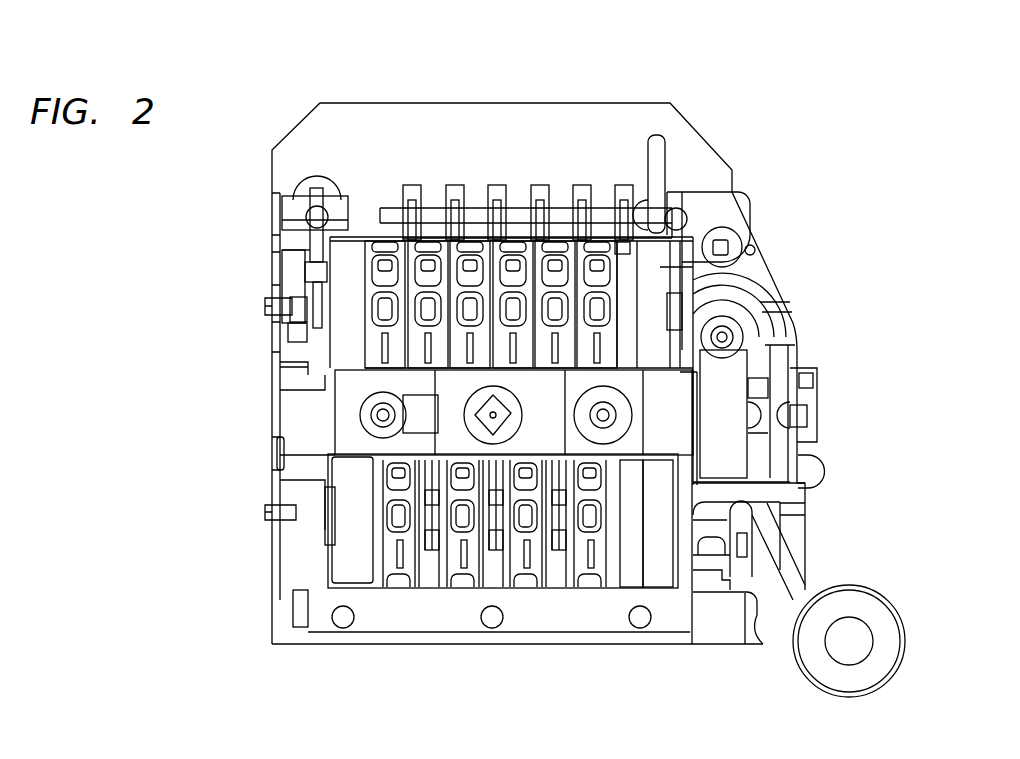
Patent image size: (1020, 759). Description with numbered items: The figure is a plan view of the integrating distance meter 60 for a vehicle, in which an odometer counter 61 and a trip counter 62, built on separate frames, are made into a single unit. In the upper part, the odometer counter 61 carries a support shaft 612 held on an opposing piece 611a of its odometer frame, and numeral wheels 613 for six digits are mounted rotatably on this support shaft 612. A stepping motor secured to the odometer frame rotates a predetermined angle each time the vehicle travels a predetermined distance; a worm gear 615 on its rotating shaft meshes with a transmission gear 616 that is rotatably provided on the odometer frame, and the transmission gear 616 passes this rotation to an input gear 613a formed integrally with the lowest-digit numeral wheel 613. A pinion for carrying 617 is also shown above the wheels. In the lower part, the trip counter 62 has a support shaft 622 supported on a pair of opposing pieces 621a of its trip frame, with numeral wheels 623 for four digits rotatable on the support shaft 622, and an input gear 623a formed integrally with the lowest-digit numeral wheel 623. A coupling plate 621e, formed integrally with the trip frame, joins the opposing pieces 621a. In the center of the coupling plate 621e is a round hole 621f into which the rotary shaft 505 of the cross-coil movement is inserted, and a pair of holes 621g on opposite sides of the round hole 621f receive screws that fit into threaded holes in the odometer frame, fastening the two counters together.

The integrating distance meter 60 is at (245, 402).
The odometer counter 61 is at (357, 208).
The trip counter 62 is at (370, 610).
The rotary shaft 505 is at (478, 412).
The opposing piece 611a is at (311, 304).
The support shaft 612 is at (265, 304).
The numeral wheels 613 is at (425, 237).
The input gear 613a is at (648, 257).
The worm gear 615 is at (724, 337).
The transmission gear 616 is at (730, 403).
The pinion for carrying 617 is at (537, 190).
The opposing pieces 621a is at (330, 512).
The coupling plate 621e is at (557, 443).
The round hole 621f is at (493, 417).
The holes 621g is at (383, 418).
The support shaft 622 is at (266, 512).
The numeral wheels 623 is at (492, 566).
The input gear 623a is at (665, 577).